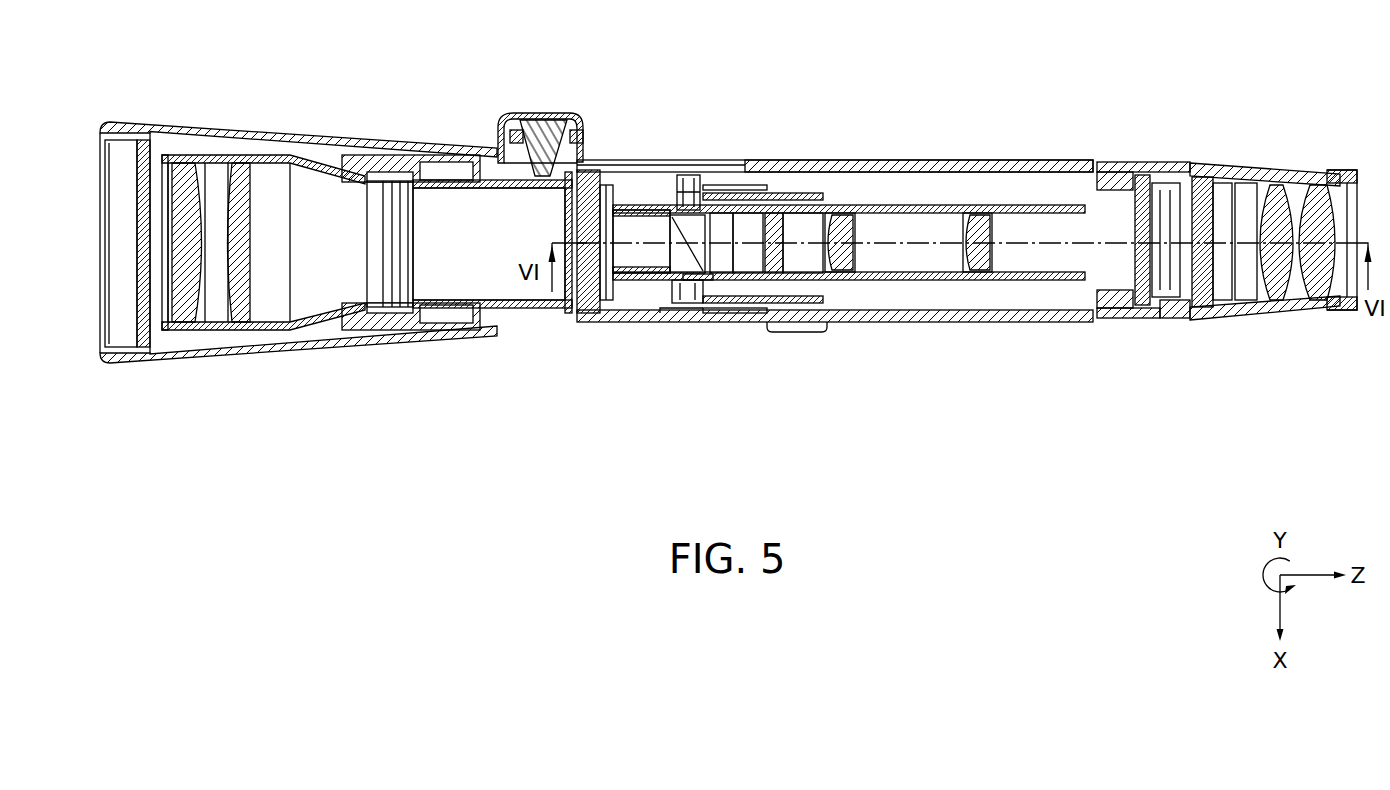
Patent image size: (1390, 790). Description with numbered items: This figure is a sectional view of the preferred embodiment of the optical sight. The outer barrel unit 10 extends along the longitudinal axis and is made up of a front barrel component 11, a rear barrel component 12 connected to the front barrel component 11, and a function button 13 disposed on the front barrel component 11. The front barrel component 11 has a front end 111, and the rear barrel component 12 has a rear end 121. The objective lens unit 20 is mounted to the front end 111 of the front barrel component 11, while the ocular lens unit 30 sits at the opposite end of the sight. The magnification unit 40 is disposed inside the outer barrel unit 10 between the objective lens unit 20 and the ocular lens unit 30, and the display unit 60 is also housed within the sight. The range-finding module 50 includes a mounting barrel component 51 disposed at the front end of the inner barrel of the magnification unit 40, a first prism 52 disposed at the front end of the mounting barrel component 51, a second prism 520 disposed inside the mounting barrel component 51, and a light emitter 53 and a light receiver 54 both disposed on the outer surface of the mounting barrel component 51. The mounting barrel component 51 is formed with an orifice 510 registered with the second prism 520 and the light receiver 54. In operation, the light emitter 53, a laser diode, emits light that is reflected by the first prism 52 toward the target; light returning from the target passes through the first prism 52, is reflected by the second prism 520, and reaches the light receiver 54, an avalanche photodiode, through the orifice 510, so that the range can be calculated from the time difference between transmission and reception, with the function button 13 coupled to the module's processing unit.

The outer barrel unit 10 is at (802, 150).
The front barrel component 11 is at (881, 165).
The rear barrel component 12 is at (1115, 320).
The rear end 121 is at (1172, 318).
The function button 13 is at (795, 332).
The objective lens unit 20 is at (257, 148).
The ocular lens unit 30 is at (1344, 163).
The magnification unit 40 is at (917, 290).
The range-finding module 50 is at (712, 166).
The mounting barrel component 51 is at (630, 210).
The first prism 52 is at (598, 268).
The light emitter 53 is at (693, 177).
The light receiver 54 is at (692, 303).
The display unit 60 is at (1141, 161).
The front end 111 is at (199, 122).
The orifice 510 is at (699, 280).
The second prism 520 is at (683, 257).